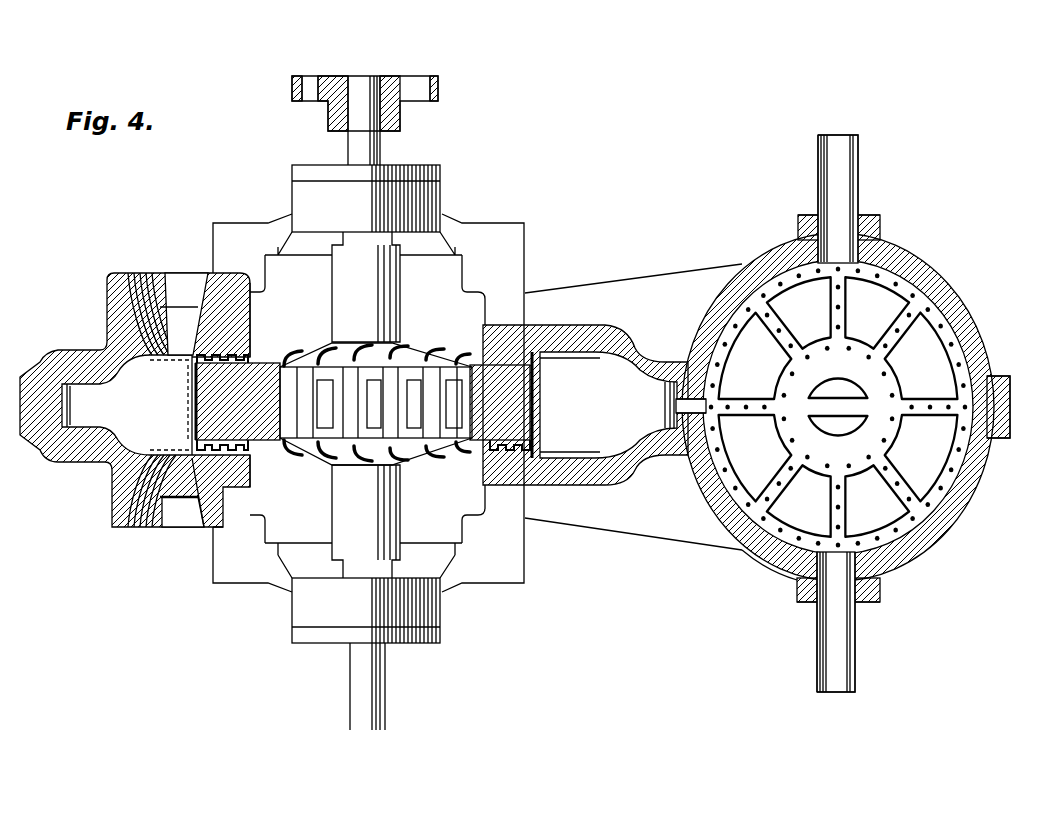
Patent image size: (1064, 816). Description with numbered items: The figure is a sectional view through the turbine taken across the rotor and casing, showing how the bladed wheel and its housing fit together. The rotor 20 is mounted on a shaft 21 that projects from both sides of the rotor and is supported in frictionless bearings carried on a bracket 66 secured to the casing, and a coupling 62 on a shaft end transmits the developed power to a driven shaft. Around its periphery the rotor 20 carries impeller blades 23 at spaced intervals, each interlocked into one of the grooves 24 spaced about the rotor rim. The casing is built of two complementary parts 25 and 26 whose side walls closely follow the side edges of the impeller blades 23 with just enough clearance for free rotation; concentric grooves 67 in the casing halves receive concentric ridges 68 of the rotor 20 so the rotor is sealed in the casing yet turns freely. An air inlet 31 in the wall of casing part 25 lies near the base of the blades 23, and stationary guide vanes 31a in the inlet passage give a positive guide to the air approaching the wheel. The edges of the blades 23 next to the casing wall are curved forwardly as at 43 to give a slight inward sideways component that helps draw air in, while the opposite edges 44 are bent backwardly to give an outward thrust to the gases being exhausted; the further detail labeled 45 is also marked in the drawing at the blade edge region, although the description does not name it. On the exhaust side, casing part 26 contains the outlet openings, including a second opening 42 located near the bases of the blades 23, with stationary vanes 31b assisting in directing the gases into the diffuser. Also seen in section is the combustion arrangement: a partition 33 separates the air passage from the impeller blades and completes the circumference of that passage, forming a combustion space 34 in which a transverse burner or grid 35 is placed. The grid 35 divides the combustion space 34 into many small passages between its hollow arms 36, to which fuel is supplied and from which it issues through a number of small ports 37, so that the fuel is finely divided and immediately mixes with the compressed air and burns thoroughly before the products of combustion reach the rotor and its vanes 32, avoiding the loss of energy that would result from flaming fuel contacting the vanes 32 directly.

The rotor 20 is at (418, 353).
The shaft 21 is at (352, 689).
The impeller blades 23 is at (378, 409).
The grooves 24 is at (210, 397).
The casing part 25 is at (742, 265).
The casing part 26 is at (758, 573).
The air inlet 31 is at (188, 292).
The stationary guide vanes 31a is at (206, 278).
The stationary vanes 31b is at (194, 542).
The vanes 32 is at (660, 456).
The partition 33 is at (690, 406).
The combustion space 34 is at (898, 508).
The burner or grid 35 is at (877, 547).
The hollow arms 36 is at (850, 469).
The ports 37 is at (918, 407).
The second opening 42 is at (185, 531).
The forwardly curved edges 43 is at (346, 357).
The backwardly bent edges 44 is at (200, 453).
The upper labyrinth seal 45 is at (195, 358).
The coupling 62 is at (438, 94).
The bracket 66 is at (442, 231).
The concentric grooves 67 is at (238, 348).
The concentric ridges 68 is at (236, 467).